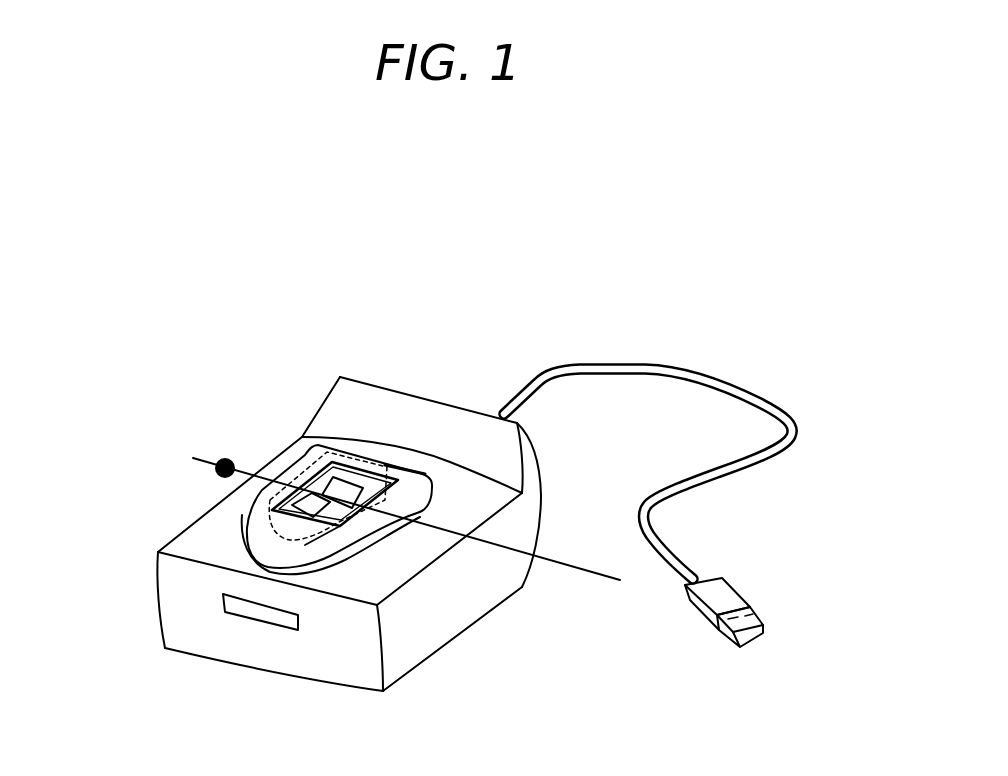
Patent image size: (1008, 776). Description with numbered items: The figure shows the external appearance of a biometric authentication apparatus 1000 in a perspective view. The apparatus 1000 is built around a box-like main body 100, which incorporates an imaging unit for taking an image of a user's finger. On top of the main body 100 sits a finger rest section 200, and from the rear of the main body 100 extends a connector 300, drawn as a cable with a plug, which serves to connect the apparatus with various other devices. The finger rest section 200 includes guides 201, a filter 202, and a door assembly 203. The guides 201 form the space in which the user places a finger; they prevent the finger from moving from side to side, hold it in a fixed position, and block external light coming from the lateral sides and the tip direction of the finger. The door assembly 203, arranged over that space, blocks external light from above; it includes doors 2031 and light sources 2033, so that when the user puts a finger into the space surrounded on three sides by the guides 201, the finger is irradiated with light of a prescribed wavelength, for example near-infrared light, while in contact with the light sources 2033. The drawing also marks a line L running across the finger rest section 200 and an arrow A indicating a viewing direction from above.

The biometric authentication apparatus 1000 is at (505, 208).
The main body 100 is at (443, 643).
The finger rest section 200 is at (232, 549).
The guides 201 is at (302, 473).
The filter 202 is at (305, 548).
The door assembly 203 is at (308, 475).
The doors 2031 is at (277, 510).
The light sources 2033 is at (327, 462).
The connector 300 is at (798, 418).
The reference line L is at (222, 478).
The viewing direction arrow A is at (370, 281).